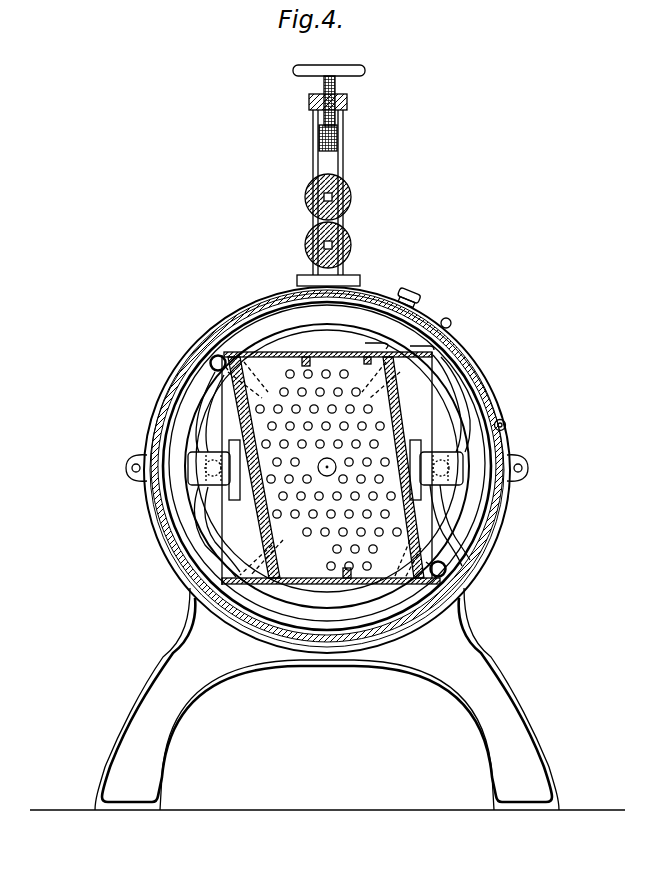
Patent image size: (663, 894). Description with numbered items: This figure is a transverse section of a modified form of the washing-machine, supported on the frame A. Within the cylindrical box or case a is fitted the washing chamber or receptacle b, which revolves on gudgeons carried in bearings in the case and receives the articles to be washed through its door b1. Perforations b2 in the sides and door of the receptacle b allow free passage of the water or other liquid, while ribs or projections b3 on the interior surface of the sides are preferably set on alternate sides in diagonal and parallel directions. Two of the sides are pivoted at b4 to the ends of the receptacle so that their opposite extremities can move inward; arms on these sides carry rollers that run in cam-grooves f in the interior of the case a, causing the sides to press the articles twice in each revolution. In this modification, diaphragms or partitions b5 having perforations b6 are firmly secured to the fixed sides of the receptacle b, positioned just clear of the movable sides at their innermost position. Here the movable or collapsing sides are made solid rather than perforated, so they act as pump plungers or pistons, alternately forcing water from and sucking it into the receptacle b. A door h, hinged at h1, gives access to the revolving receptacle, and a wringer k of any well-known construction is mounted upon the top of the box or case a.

The frame A is at (327, 699).
The cylindrical box or case a is at (504, 541).
The cam-grooves f is at (306, 337).
The door h is at (461, 357).
The hinge h1 is at (506, 425).
The wringer k is at (340, 192).
The washing chamber or receptacle b is at (378, 586).
The door b1 is at (365, 343).
The perforations b2 is at (330, 508).
The ribs or projections b3 is at (308, 364).
The pivot b4 is at (212, 368).
The diaphragms or partitions b5 is at (262, 520).
The perforations b6 is at (232, 374).